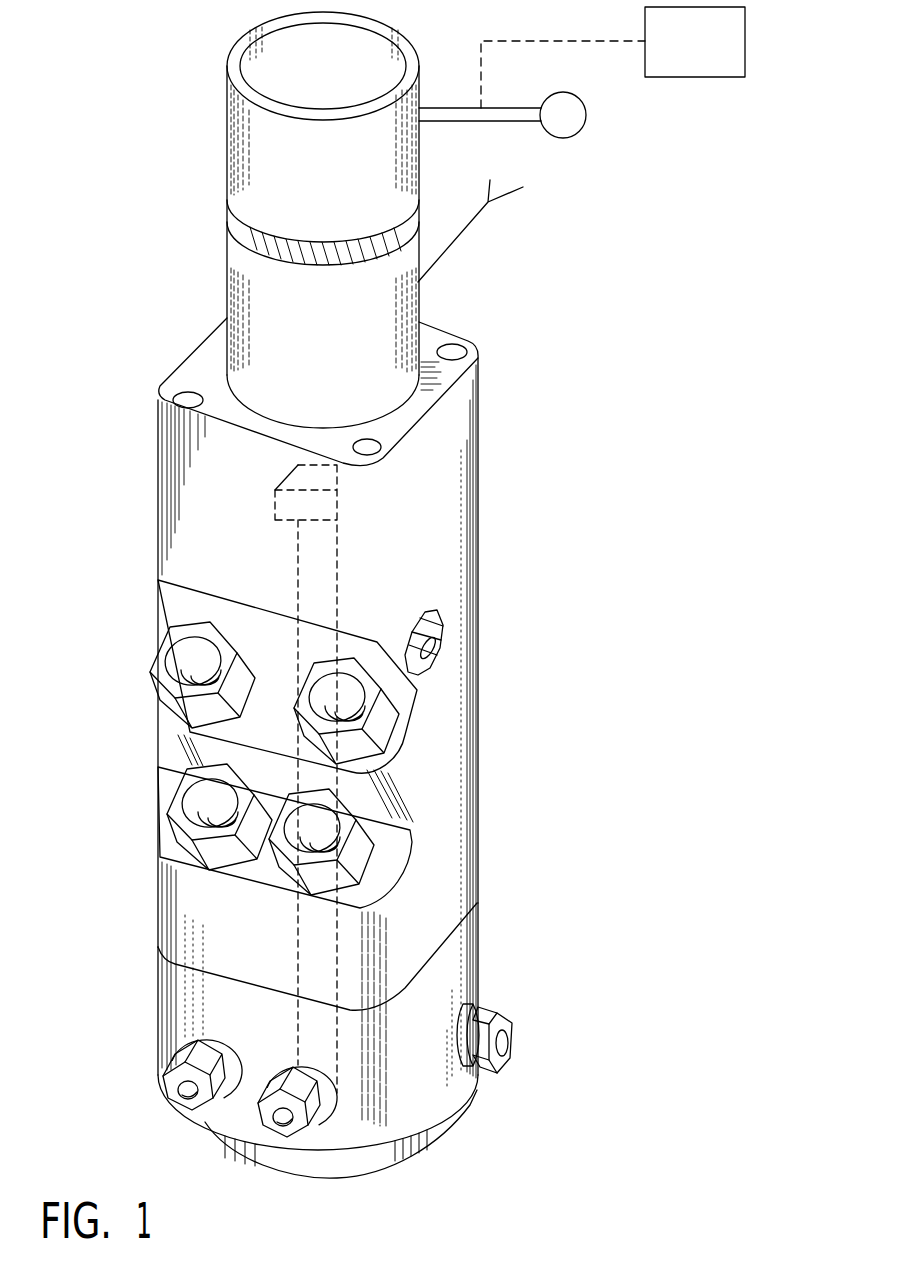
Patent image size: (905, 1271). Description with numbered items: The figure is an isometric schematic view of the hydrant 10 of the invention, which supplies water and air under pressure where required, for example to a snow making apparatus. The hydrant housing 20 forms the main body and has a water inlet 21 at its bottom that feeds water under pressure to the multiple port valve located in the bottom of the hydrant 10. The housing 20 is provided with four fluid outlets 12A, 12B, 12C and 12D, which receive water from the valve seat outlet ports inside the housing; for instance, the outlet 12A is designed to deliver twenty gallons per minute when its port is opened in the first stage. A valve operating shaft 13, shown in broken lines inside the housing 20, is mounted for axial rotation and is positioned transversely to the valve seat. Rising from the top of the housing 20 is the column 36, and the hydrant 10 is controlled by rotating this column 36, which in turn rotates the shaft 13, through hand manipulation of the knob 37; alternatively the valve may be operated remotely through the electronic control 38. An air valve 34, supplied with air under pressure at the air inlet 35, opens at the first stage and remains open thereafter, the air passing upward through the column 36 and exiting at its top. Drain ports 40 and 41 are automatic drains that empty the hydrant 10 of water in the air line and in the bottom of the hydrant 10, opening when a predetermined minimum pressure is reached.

The hydrant 10 is at (480, 577).
The fluid outlet 12A is at (180, 806).
The fluid outlet 12B is at (368, 700).
The fluid outlet 12C is at (173, 656).
The fluid outlet 12D is at (365, 828).
The valve operating shaft 13 is at (298, 572).
The hydrant housing 20 is at (455, 800).
The water inlet 21 is at (390, 1157).
The air valve 34 is at (332, 512).
The air inlet 35 is at (447, 243).
The column 36 is at (232, 286).
The knob 37 is at (582, 122).
The electronic control 38 is at (745, 40).
The drain port 40 is at (165, 1103).
The drain port 41 is at (440, 643).